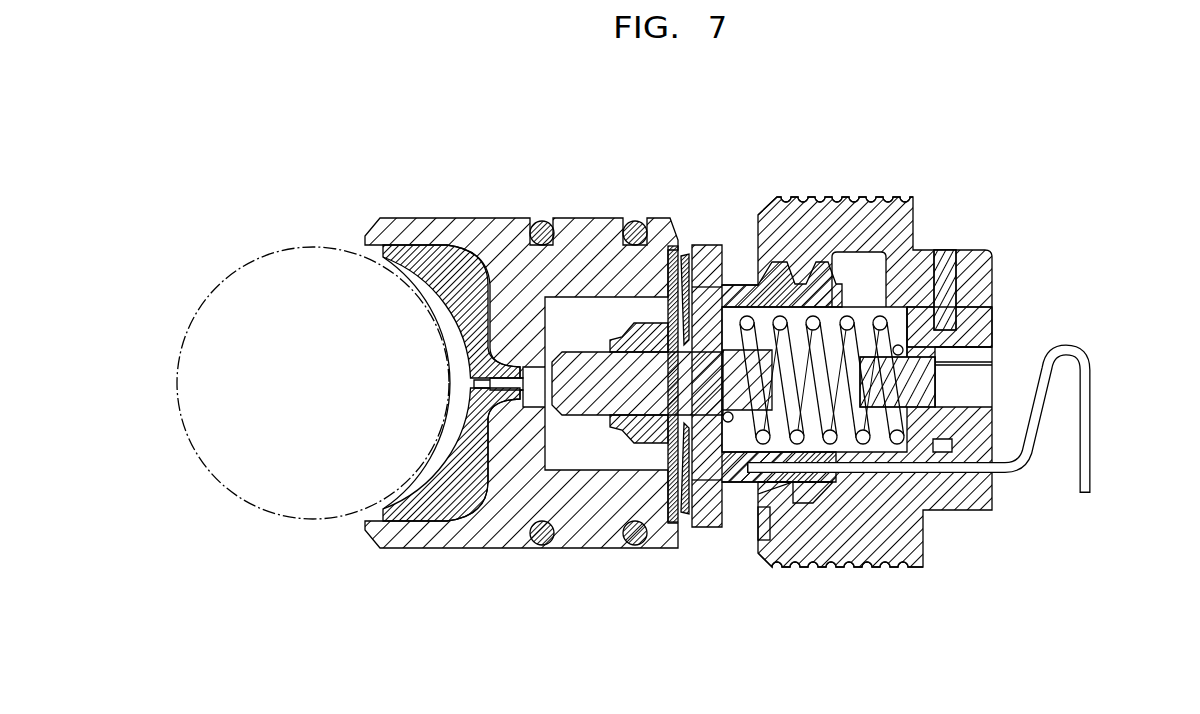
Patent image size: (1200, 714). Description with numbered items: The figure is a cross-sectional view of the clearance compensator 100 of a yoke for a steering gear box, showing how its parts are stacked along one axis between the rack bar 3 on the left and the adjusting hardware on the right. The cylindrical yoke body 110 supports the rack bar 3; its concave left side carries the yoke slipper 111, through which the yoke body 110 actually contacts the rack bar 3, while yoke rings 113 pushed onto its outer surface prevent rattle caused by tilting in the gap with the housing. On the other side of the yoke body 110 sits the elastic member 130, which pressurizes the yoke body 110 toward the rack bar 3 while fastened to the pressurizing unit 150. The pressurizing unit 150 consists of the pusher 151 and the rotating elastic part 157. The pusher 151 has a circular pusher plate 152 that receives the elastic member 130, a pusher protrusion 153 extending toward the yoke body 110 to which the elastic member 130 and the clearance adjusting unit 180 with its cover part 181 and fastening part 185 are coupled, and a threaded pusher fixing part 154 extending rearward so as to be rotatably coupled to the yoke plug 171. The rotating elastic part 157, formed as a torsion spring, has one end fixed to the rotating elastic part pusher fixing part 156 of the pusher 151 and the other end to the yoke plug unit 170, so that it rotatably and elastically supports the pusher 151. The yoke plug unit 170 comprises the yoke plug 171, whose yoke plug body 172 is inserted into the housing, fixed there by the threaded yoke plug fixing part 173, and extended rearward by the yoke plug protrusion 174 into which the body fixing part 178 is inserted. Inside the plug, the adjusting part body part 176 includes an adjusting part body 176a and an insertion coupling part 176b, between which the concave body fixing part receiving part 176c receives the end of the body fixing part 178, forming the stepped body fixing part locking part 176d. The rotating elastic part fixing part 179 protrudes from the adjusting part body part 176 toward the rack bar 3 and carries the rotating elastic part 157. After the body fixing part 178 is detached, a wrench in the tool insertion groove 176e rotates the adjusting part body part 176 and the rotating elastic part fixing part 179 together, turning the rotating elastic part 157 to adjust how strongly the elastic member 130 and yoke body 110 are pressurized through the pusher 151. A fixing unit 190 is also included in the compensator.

The rack bar 3 is at (250, 258).
The clearance compensator 100 is at (1086, 95).
The yoke body 110 is at (492, 240).
The yoke slipper 111 is at (430, 248).
The yoke ring 113 is at (543, 220).
The elastic member 130 is at (690, 307).
The pressurizing unit 150 is at (697, 454).
The pusher 151 is at (697, 442).
The pusher plate 152 is at (697, 525).
The pusher protrusion 153 is at (598, 397).
The pusher fixing part 154 is at (773, 493).
The rotating elastic part pusher fixing part 156 is at (740, 385).
The rotating elastic part 157 is at (795, 519).
The yoke plug unit 170 is at (926, 362).
The yoke plug 171 is at (883, 408).
The yoke plug body 172 is at (925, 540).
The yoke plug fixing part 173 is at (885, 570).
The yoke plug protrusion 174 is at (972, 433).
The adjusting part body part 176 is at (995, 289).
The adjusting part body 176a is at (980, 257).
The insertion coupling part 176b is at (980, 300).
The body fixing part receiving part 176c is at (977, 287).
The body fixing part locking part 176d is at (983, 293).
The tool insertion groove 176e is at (1018, 332).
The body fixing part 178 is at (948, 250).
The rotating elastic part fixing part 179 is at (883, 323).
The clearance adjusting unit 180 is at (641, 325).
The cover part 181 is at (678, 248).
The fastening part 185 is at (630, 333).
The fixing unit 190 is at (1088, 418).